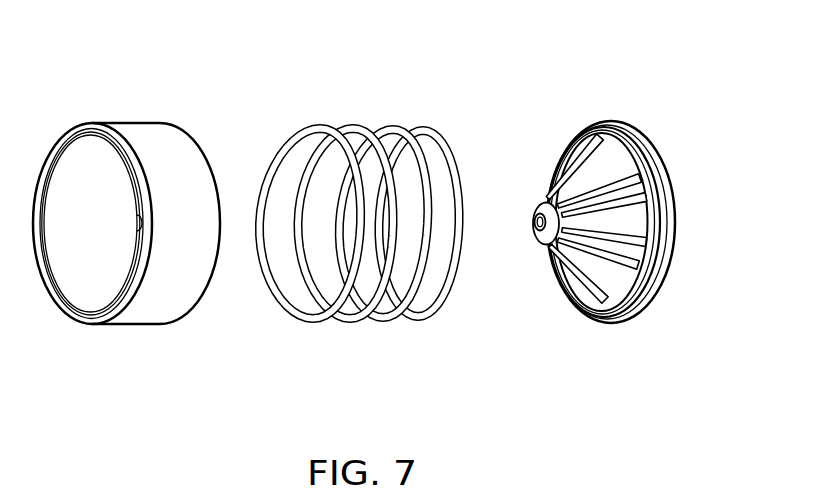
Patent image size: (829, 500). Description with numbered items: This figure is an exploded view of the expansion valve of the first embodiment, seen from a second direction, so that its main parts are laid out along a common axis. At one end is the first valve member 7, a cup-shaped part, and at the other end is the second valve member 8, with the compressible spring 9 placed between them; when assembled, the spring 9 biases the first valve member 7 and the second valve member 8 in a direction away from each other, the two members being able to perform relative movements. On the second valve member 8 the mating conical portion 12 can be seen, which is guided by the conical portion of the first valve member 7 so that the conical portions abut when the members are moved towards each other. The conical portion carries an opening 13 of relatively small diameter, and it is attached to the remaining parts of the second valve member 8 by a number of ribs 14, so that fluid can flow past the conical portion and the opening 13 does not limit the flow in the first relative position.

The first valve member 7 is at (148, 157).
The compressible spring 9 is at (388, 133).
The second valve member 8 is at (607, 223).
The ribs 14 is at (561, 259).
The conical portion 12 is at (551, 232).
The opening 13 is at (535, 228).